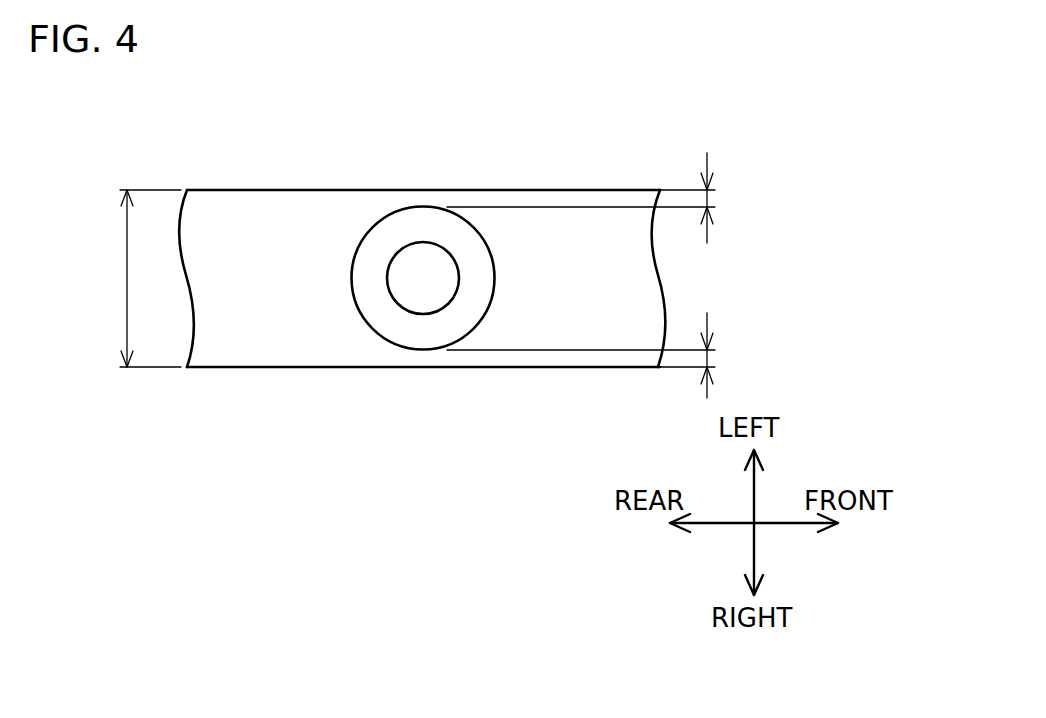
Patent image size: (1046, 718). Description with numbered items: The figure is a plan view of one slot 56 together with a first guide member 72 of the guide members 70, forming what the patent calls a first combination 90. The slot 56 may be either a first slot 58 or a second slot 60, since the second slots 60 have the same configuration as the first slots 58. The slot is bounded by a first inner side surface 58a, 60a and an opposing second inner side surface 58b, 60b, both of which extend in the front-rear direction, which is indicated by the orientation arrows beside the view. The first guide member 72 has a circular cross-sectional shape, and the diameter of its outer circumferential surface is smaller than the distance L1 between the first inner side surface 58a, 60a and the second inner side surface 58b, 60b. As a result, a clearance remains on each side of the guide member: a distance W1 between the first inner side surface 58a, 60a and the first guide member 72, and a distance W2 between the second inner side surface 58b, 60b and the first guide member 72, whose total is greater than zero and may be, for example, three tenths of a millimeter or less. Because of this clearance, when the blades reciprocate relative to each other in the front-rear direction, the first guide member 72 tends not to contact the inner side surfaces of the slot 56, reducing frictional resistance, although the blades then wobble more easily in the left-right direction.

The first slot 58 is at (342, 266).
The second slot 60 is at (342, 266).
The slot 56 is at (342, 266).
The first inner side surface 58a is at (423, 150).
The first inner side surface 60a is at (246, 190).
The second inner side surface 58b is at (423, 407).
The second inner side surface 60b is at (246, 367).
The first guide member 72 is at (384, 250).
The guide member 70 is at (384, 250).
The first combination 90 is at (342, 266).
The distance between first and second inner side surfaces L1 is at (135, 278).
The distance between first inner side surface and first guide member W1 is at (601, 198).
The distance between second inner side surface and first guide member W2 is at (601, 355).